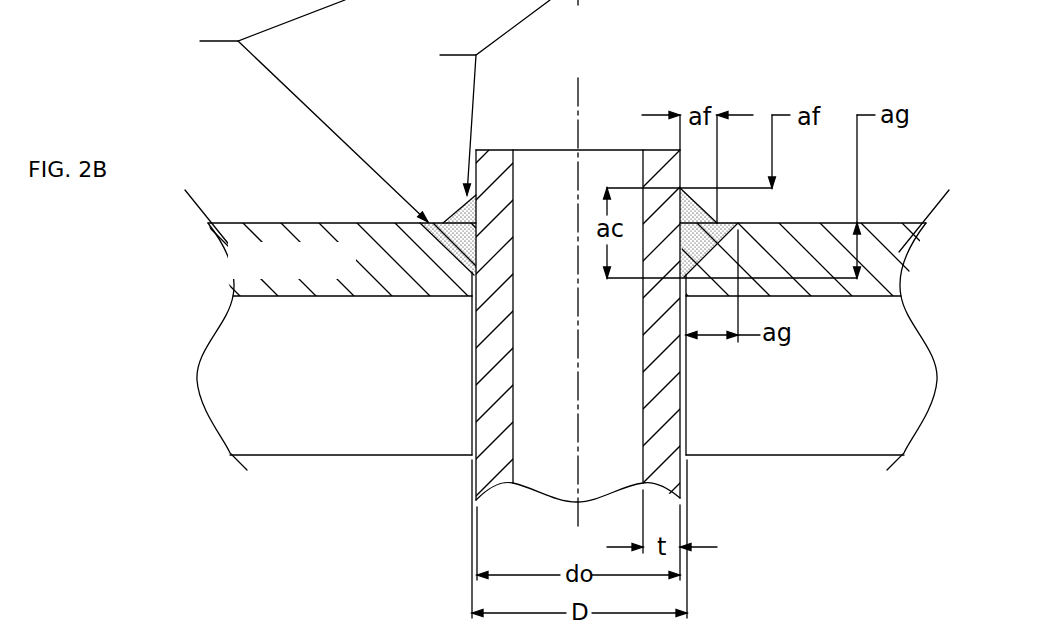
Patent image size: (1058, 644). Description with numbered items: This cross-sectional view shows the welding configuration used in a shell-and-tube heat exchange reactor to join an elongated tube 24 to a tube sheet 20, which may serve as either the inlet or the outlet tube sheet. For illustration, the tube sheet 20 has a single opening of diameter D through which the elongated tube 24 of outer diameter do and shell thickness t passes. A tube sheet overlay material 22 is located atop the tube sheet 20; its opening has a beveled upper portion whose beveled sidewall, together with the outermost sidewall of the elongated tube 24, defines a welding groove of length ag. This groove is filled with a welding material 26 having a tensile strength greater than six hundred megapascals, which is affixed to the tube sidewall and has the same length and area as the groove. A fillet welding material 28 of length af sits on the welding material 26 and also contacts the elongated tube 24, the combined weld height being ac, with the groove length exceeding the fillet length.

The tube sheet 20 is at (308, 307).
The tube sheet overlay material 22 is at (307, 190).
The elongated tube 24 is at (576, 264).
The welding material 26 is at (455, 233).
The fillet welding material 28 is at (472, 208).